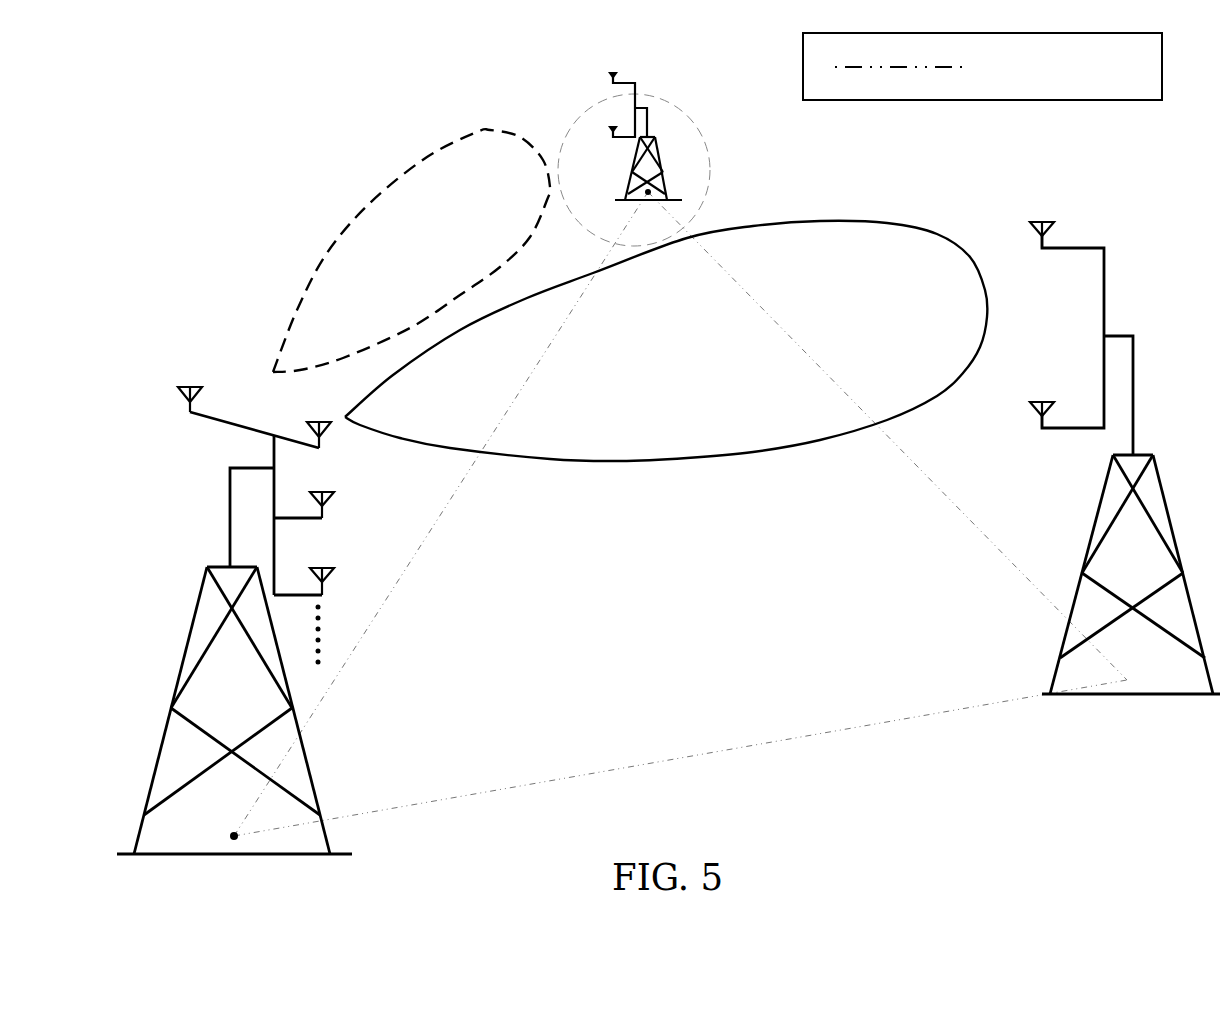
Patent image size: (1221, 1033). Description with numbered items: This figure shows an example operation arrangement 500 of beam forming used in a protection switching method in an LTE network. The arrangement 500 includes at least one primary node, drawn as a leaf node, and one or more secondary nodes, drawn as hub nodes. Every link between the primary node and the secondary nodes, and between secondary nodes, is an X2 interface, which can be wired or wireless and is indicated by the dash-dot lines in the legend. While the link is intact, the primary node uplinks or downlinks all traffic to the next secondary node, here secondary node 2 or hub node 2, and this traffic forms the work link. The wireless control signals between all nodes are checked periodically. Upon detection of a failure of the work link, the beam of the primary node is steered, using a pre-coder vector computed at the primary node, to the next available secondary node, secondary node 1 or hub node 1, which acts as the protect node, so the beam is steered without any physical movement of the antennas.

The arrangement 500 is at (876, 812).
The secondary node 1 or hub node 1 is at (1107, 464).
The secondary node 2 or hub node 2 is at (664, 156).